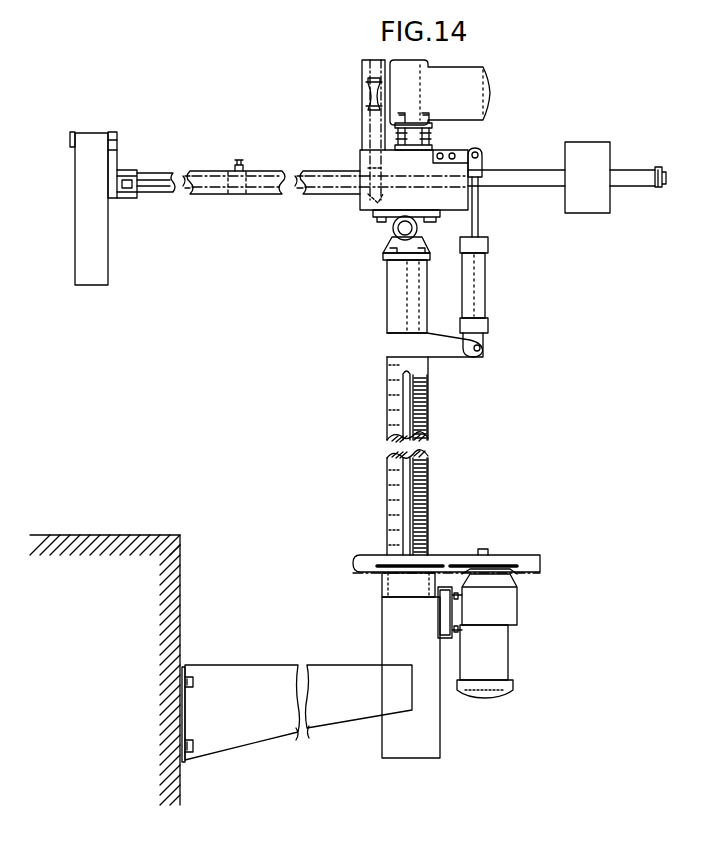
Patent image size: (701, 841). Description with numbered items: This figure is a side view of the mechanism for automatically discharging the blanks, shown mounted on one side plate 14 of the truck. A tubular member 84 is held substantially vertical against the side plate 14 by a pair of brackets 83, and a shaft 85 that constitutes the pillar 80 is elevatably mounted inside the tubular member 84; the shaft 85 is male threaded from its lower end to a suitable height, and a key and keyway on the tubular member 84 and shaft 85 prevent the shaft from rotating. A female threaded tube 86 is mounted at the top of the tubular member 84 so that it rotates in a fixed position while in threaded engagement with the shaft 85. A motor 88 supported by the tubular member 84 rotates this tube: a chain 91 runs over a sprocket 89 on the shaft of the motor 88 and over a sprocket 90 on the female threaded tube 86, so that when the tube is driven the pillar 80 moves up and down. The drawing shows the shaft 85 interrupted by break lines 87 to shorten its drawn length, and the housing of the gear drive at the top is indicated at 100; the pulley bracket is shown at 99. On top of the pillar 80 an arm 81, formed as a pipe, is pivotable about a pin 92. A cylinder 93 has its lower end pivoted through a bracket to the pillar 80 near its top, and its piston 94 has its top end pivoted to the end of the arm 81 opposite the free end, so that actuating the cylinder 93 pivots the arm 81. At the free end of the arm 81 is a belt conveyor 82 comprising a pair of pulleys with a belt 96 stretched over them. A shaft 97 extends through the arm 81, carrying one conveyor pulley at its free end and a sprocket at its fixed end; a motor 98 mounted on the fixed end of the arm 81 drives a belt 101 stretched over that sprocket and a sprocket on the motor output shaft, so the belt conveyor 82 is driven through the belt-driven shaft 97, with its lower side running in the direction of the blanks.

The side plate 14 is at (180, 590).
The pillar 80 is at (387, 290).
The arm 81 is at (200, 170).
The belt conveyor 82 is at (75, 200).
The brackets 83 is at (310, 728).
The tubular member 84 is at (418, 751).
The shaft 85 is at (393, 371).
The female threaded tube 86 is at (388, 575).
The break lines of spindle 87 is at (400, 457).
The motor 88 is at (492, 695).
The sprocket 89 is at (512, 571).
The sprocket 90 is at (385, 556).
The chain 91 is at (451, 556).
The pin 92 is at (392, 243).
The cylinder 93 is at (482, 296).
The piston 94 is at (480, 213).
The belt 96 is at (76, 170).
The shaft 97 is at (302, 171).
The motor 98 is at (488, 108).
The pulley 99 is at (369, 86).
The gear housing 100 is at (369, 203).
The belt 101 is at (371, 125).